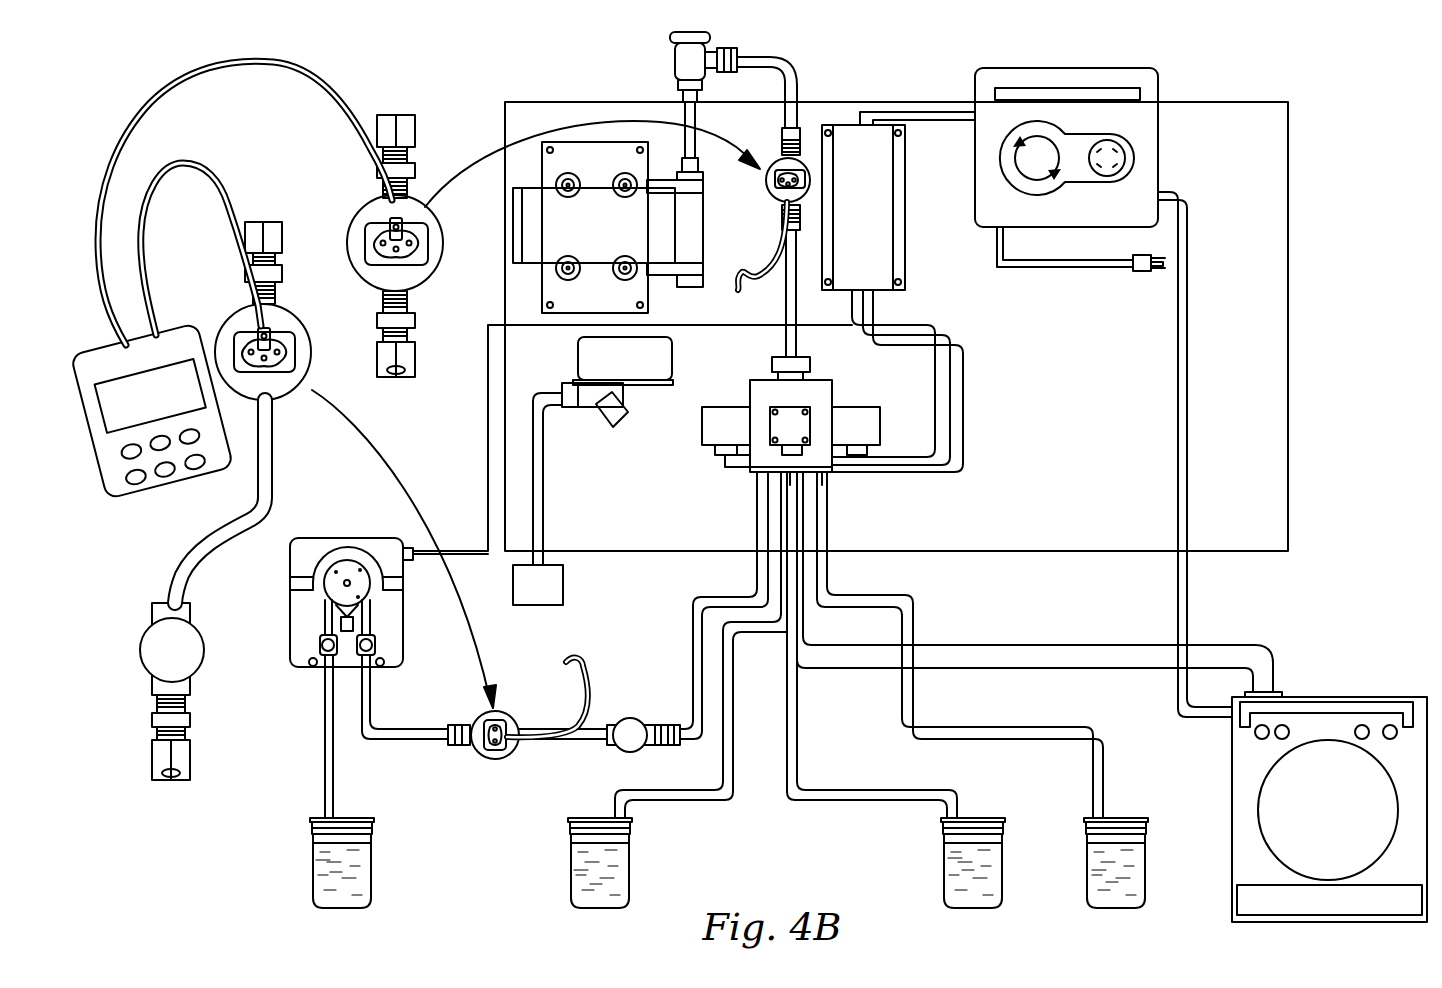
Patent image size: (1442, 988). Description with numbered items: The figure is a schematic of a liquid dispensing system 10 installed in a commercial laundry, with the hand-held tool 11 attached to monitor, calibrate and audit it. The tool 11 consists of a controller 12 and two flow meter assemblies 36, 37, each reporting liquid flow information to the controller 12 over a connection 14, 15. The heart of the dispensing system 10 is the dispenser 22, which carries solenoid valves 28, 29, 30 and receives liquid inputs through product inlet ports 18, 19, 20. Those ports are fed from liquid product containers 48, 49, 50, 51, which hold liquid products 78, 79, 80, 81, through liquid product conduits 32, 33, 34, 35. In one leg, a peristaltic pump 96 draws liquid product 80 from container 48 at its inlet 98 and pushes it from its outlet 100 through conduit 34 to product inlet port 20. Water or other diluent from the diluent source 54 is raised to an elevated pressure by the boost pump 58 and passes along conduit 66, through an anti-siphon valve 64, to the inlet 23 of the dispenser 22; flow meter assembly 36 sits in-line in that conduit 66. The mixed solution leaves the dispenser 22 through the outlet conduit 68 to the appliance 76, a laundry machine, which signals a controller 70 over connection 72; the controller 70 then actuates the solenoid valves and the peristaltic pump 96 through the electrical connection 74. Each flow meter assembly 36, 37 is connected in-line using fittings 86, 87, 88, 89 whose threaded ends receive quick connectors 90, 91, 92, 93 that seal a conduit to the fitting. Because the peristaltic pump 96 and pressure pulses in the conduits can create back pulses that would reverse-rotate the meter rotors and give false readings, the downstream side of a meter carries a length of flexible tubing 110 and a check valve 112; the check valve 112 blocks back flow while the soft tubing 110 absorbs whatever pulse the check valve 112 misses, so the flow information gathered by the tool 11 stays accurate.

The liquid dispensing system 10 is at (1272, 76).
The hand-held tool 11 is at (122, 102).
The controller 12 is at (122, 343).
The connection 14 is at (285, 61).
The connection 15 is at (184, 160).
The product inlet port 18 is at (822, 478).
The product inlet port 19 is at (790, 480).
The product inlet port 20 is at (758, 478).
The dispenser 22 is at (794, 436).
The inlet 23 is at (783, 362).
The solenoid valve 28 is at (872, 428).
The solenoid valve 29 is at (790, 418).
The solenoid valve 30 is at (712, 440).
The liquid product conduit 32 is at (1086, 735).
The liquid product conduit 33 is at (945, 792).
The liquid product conduit 34 is at (695, 630).
The liquid product conduit 35 is at (705, 795).
The flow meter assembly 36 is at (308, 315).
The flow meter assembly 37 is at (350, 213).
The liquid product container 48 is at (373, 840).
The liquid product container 49 is at (631, 840).
The liquid product container 50 is at (1147, 840).
The liquid product container 51 is at (1004, 840).
The water or diluent source 54 is at (564, 581).
The boost pump 58 is at (534, 237).
The anti-siphon valve 64 is at (683, 62).
The conduit 66 is at (778, 71).
The outlet conduit 68 is at (1112, 648).
The controller 70 is at (1149, 130).
The connection 72 is at (1188, 430).
The electrical connection 74 is at (883, 190).
The appliance 76 is at (1240, 790).
The liquid product 78 is at (1090, 878).
The liquid product 79 is at (946, 866).
The liquid product 80 is at (318, 866).
The liquid product 81 is at (578, 878).
The fitting 86 is at (415, 320).
The fitting 87 is at (378, 172).
The fitting 88 is at (246, 273).
The fitting 89 is at (152, 718).
The quick connector 90 is at (406, 355).
The quick connector 91 is at (415, 131).
The quick connector 92 is at (152, 755).
The quick connector 93 is at (282, 237).
The peristaltic pump 96 is at (349, 641).
The inlet 98 is at (321, 670).
The outlet 100 is at (371, 670).
The flexible tubing 110 is at (267, 463).
The check valve 112 is at (151, 650).